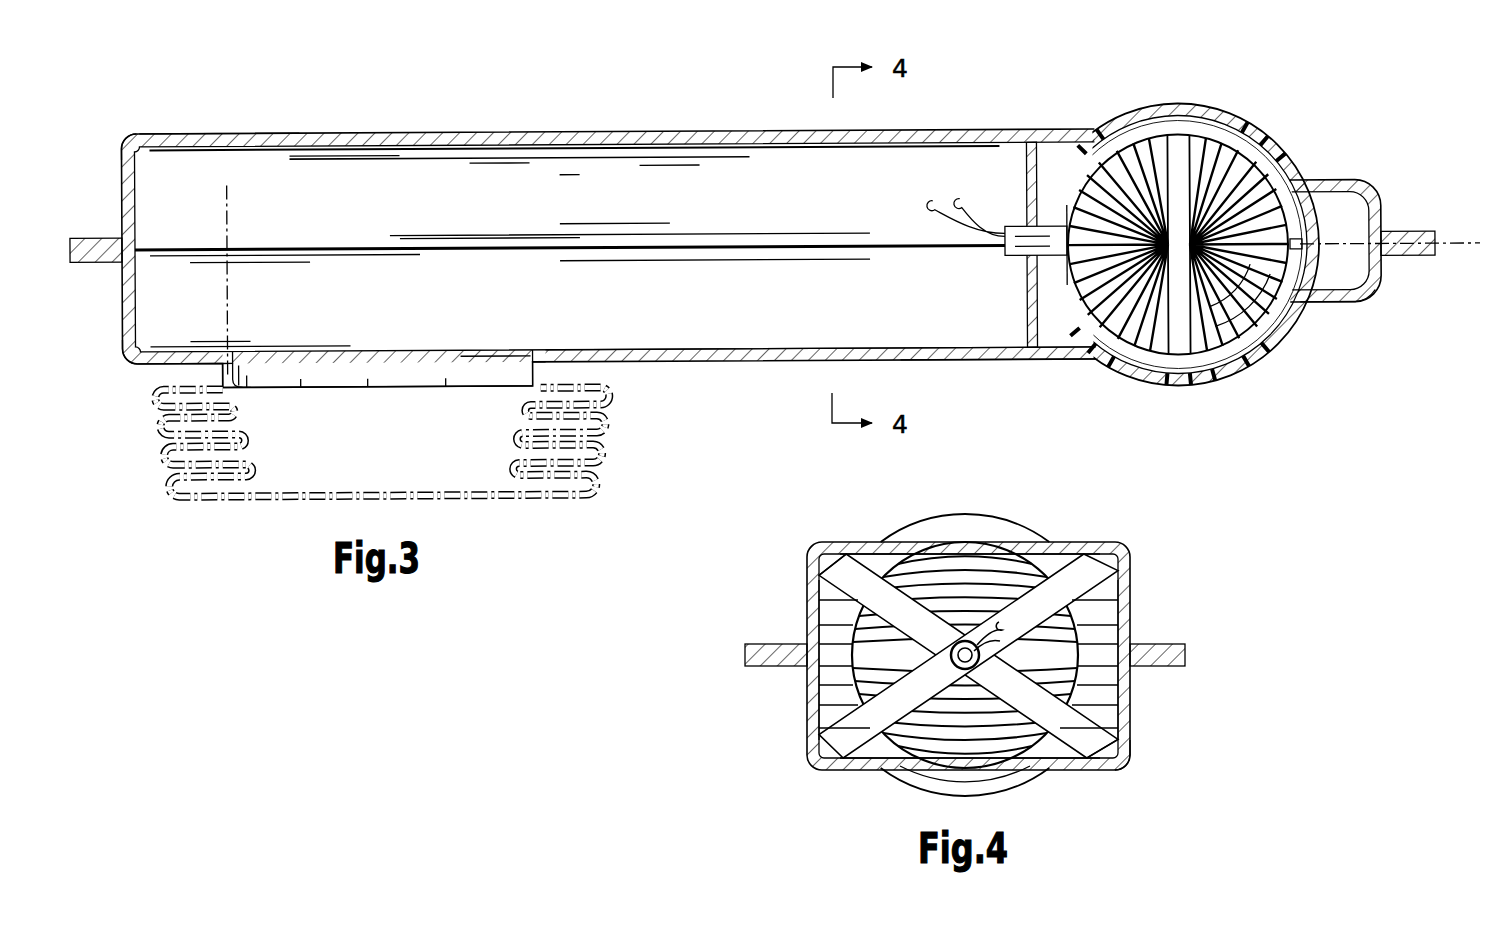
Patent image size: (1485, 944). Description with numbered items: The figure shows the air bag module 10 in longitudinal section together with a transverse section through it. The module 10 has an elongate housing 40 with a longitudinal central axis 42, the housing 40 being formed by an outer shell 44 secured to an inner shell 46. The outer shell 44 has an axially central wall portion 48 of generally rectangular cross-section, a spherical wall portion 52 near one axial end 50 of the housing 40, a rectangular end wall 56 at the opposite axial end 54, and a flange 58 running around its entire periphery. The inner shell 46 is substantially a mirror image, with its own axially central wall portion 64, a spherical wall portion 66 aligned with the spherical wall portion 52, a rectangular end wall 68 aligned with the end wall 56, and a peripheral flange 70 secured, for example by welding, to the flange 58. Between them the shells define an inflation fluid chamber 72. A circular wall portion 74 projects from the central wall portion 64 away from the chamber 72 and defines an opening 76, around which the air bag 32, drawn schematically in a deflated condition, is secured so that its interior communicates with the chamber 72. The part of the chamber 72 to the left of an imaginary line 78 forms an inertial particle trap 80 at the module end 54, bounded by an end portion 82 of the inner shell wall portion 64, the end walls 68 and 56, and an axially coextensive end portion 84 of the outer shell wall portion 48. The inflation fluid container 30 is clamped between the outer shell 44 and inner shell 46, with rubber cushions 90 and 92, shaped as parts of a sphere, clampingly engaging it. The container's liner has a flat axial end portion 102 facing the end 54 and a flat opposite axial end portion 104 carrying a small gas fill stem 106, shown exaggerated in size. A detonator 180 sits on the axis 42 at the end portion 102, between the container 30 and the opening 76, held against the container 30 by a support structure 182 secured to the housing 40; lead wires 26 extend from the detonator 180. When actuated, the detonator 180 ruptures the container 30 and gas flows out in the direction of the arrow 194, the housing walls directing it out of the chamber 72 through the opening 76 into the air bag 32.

In FIG. 3, the module 10 is at (460, 44).
In FIG. 4, the module 10 is at (690, 836).
In FIG. 3, the lead wires 26 is at (1003, 244).
In FIG. 4, the lead wires 26 is at (975, 638).
In FIG. 3, the inflation fluid container 30 is at (1078, 163).
In FIG. 4, the inflation fluid container 30 is at (800, 600).
In FIG. 3, the air bag 32 is at (605, 417).
In FIG. 3, the housing 40 is at (459, 128).
In FIG. 3, the longitudinal central axis 42 is at (1480, 255).
In FIG. 3, the outer shell 44 is at (323, 128).
In FIG. 4, the outer shell 44 is at (1148, 584).
In FIG. 3, the inner shell 46 is at (628, 346).
In FIG. 4, the inner shell 46 is at (1142, 722).
In FIG. 3, the axially central wall portion 48 is at (616, 132).
In FIG. 4, the axially central wall portion 48 is at (1095, 540).
In FIG. 3, the axial end 50 is at (1368, 430).
In FIG. 3, the spherical wall portion 52 is at (1278, 152).
In FIG. 4, the spherical wall portion 52 is at (1018, 528).
In FIG. 3, the opposite axial end 54 is at (151, 520).
In FIG. 3, the rectangular end wall 56 is at (125, 160).
In FIG. 3, the flange 58 is at (96, 236).
In FIG. 4, the flange 58 is at (1165, 655).
In FIG. 3, the axially central wall portion 64 is at (745, 350).
In FIG. 4, the axially central wall portion 64 is at (1105, 772).
In FIG. 3, the spherical wall portion 66 is at (1290, 332).
In FIG. 4, the spherical wall portion 66 is at (1015, 790).
In FIG. 3, the rectangular end wall 68 is at (130, 362).
In FIG. 3, the peripheral flange 70 is at (76, 264).
In FIG. 4, the peripheral flange 70 is at (1160, 668).
In FIG. 3, the inflation fluid chamber 72 is at (510, 190).
In FIG. 4, the inflation fluid chamber 72 is at (830, 690).
In FIG. 3, the circular wall portion 74 is at (238, 372).
In FIG. 3, the opening 76 is at (405, 376).
In FIG. 3, the imaginary line 78 is at (228, 184).
In FIG. 3, the inertial particle trap 80 is at (185, 200).
In FIG. 3, the end portion 82 is at (160, 368).
In FIG. 3, the end portion 84 is at (200, 134).
In FIG. 3, the rubber cushion 90 is at (1185, 135).
In FIG. 4, the rubber cushion 90 is at (925, 580).
In FIG. 3, the rubber cushion 92 is at (1190, 383).
In FIG. 4, the rubber cushion 92 is at (920, 750).
In FIG. 3, the flat axial end portion 102 is at (1063, 353).
In FIG. 4, the flat axial end portion 102 is at (842, 748).
In FIG. 3, the flat opposite axial end portion 104 is at (1345, 306).
In FIG. 3, the gas fill stem 106 is at (1355, 185).
In FIG. 3, the detonator 180 is at (1010, 265).
In FIG. 4, the detonator 180 is at (870, 760).
In FIG. 3, the support structure 182 is at (1027, 180).
In FIG. 4, the support structure 182 is at (815, 755).
In FIG. 3, the arrow 194 is at (735, 195).